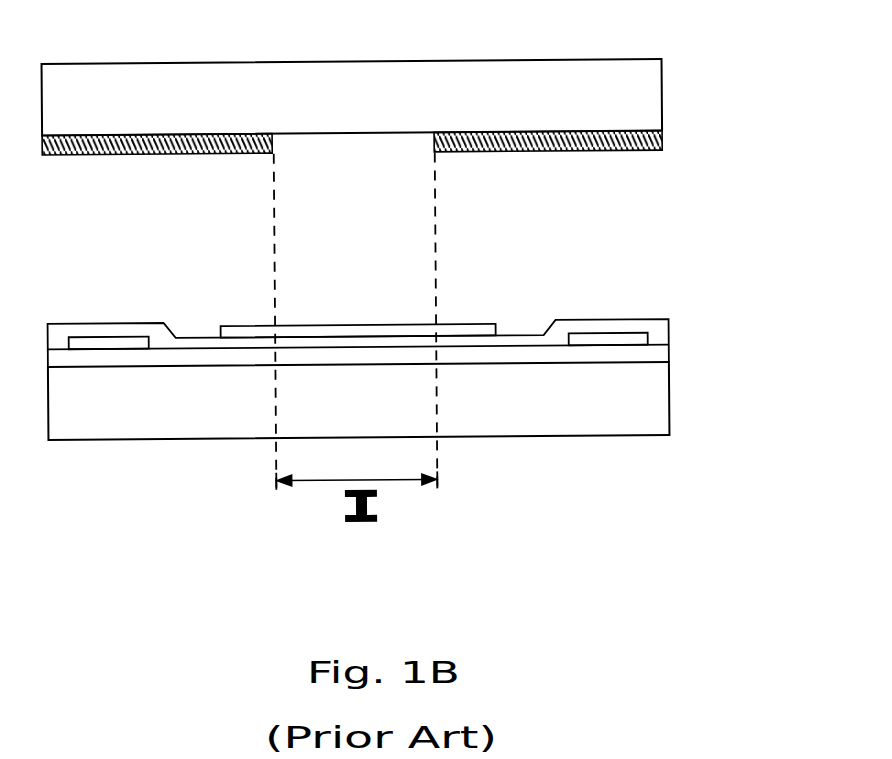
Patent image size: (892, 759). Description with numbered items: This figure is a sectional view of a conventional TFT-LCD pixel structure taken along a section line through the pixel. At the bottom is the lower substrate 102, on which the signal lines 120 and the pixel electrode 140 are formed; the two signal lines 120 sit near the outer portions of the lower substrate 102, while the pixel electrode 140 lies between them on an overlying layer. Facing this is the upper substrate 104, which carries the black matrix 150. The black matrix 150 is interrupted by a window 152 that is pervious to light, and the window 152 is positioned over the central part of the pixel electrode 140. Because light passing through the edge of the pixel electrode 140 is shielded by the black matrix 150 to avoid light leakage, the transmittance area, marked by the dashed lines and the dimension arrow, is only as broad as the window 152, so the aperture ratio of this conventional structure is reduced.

The lower substrate 102 is at (643, 402).
The upper substrate 104 is at (643, 92).
The signal lines 120 is at (112, 337).
The pixel electrode 140 is at (460, 326).
The black matrix 150 is at (667, 138).
The window 152 is at (433, 152).